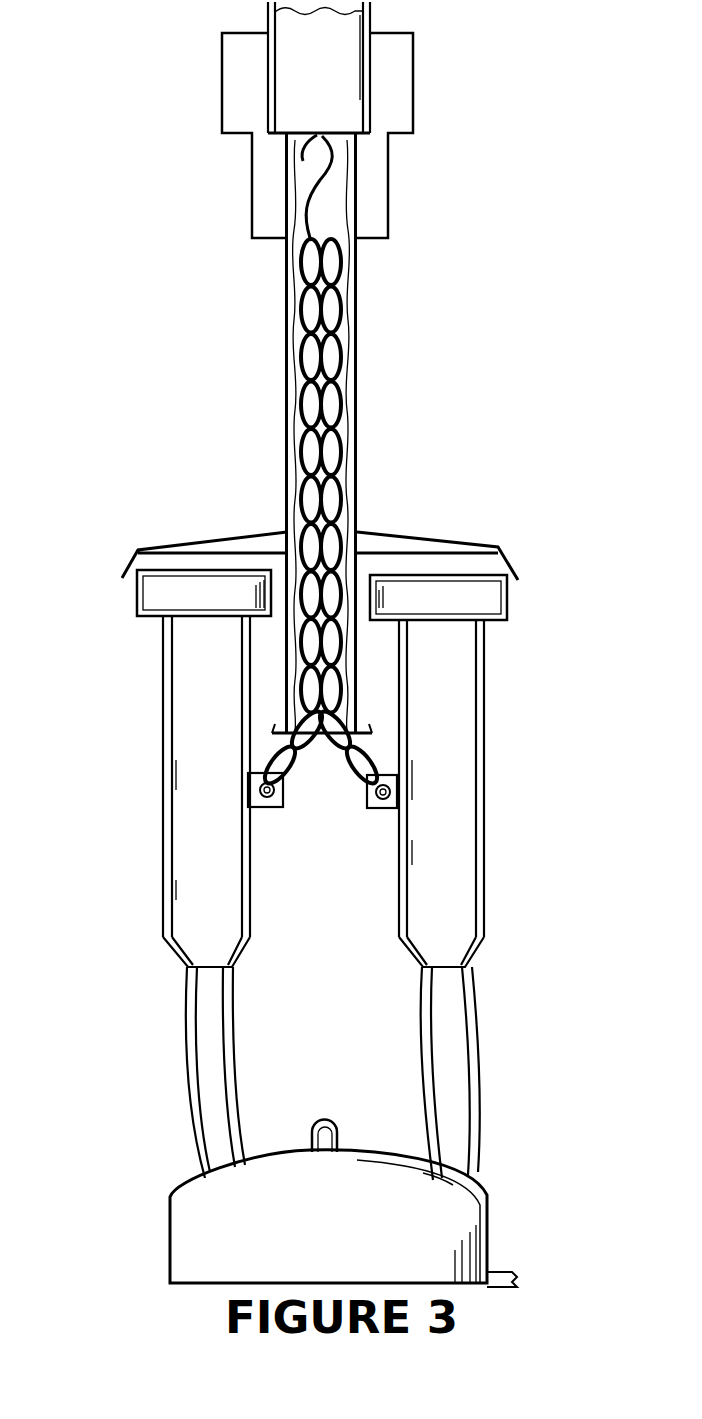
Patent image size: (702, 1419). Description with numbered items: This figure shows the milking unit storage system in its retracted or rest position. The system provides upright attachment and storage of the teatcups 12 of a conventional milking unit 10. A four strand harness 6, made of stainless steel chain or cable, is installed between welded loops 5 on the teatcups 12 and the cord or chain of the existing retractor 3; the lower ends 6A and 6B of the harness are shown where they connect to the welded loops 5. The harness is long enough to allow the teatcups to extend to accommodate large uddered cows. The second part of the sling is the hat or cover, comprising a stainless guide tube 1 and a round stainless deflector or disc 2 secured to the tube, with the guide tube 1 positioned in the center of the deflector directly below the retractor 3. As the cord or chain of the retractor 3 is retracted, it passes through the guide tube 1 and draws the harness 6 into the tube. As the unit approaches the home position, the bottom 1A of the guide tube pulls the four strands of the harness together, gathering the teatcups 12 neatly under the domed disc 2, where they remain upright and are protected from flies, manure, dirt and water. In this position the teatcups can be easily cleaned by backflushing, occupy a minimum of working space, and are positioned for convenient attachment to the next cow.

The stainless guide tube 1 is at (368, 637).
The bottom of the stainless tube 1A is at (277, 733).
The deflector or disc 2 is at (243, 532).
The retractor 3 is at (373, 17).
The welded loops 5 is at (252, 793).
The four strand harness 6 is at (354, 297).
The lower end of harness 6A is at (348, 777).
The lower end of harness 6B is at (300, 775).
The milking unit 10 is at (366, 1143).
The teatcups 12 is at (487, 740).